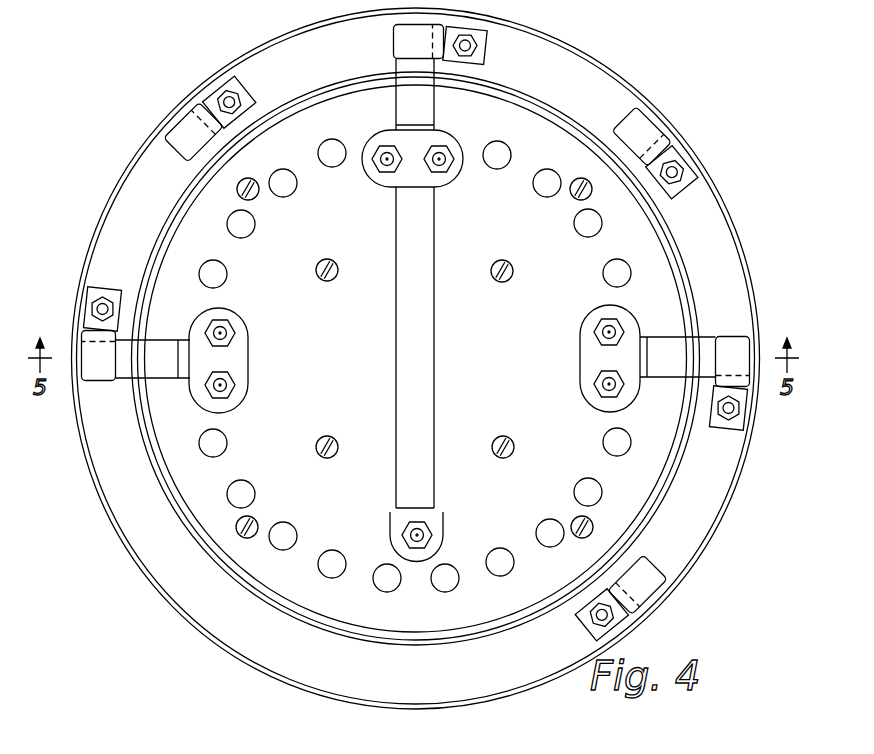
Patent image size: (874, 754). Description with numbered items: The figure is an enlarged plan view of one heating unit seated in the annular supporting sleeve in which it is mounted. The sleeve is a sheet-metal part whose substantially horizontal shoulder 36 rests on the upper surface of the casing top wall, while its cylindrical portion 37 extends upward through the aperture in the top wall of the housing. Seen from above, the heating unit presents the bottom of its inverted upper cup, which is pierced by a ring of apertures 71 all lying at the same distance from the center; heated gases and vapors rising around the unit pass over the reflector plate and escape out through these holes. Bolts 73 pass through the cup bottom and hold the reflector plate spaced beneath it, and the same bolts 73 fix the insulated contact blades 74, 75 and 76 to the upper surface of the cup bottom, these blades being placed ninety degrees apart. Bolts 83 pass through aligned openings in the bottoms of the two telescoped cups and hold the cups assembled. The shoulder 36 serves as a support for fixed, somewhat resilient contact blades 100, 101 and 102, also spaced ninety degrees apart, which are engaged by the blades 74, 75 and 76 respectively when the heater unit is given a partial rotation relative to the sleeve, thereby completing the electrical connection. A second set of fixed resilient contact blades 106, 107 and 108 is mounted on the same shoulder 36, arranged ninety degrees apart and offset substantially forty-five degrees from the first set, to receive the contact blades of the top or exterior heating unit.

The horizontal shoulder 36 is at (697, 507).
The cylindrical portion 37 is at (740, 478).
The apertures 71 is at (579, 486).
The bolts 73 is at (223, 332).
The contact blade 74 is at (157, 342).
The contact blade 75 is at (430, 112).
The contact blade 76 is at (658, 347).
The bolts 83 is at (237, 528).
The fixed contact blade 100 is at (92, 335).
The fixed contact blade 101 is at (430, 36).
The fixed contact blade 102 is at (733, 355).
The fixed contact blade 106 is at (185, 120).
The fixed contact blade 107 is at (647, 130).
The fixed contact blade 108 is at (642, 592).